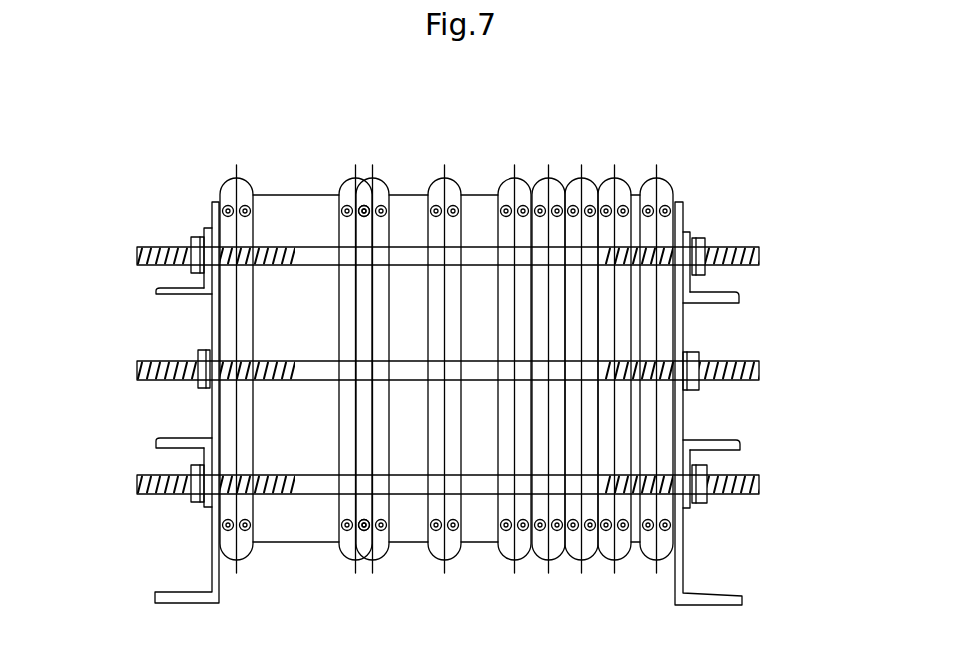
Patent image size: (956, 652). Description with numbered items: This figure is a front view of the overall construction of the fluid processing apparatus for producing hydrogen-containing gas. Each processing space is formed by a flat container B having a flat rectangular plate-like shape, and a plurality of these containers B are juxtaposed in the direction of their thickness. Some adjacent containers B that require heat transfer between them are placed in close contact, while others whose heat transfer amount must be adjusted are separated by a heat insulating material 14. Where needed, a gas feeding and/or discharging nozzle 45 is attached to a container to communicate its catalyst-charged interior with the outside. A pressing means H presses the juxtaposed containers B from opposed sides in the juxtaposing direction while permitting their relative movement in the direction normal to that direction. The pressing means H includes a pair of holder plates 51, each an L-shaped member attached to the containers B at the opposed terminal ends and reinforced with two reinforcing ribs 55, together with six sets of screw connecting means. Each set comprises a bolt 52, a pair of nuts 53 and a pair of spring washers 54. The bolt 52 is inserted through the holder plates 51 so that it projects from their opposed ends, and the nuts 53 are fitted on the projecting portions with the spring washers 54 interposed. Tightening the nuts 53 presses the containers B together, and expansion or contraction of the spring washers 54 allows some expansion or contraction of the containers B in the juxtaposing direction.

The heat insulating material 14 is at (288, 195).
The gas feeding and/or discharging nozzle 45 is at (455, 183).
The holder plate 51 is at (213, 332).
The bolt 52 is at (758, 253).
The nut 53 is at (707, 240).
The spring washer 54 is at (693, 235).
The reinforcing rib 55 is at (725, 303).
The flat container B is at (225, 178).
The pressing means H is at (752, 173).